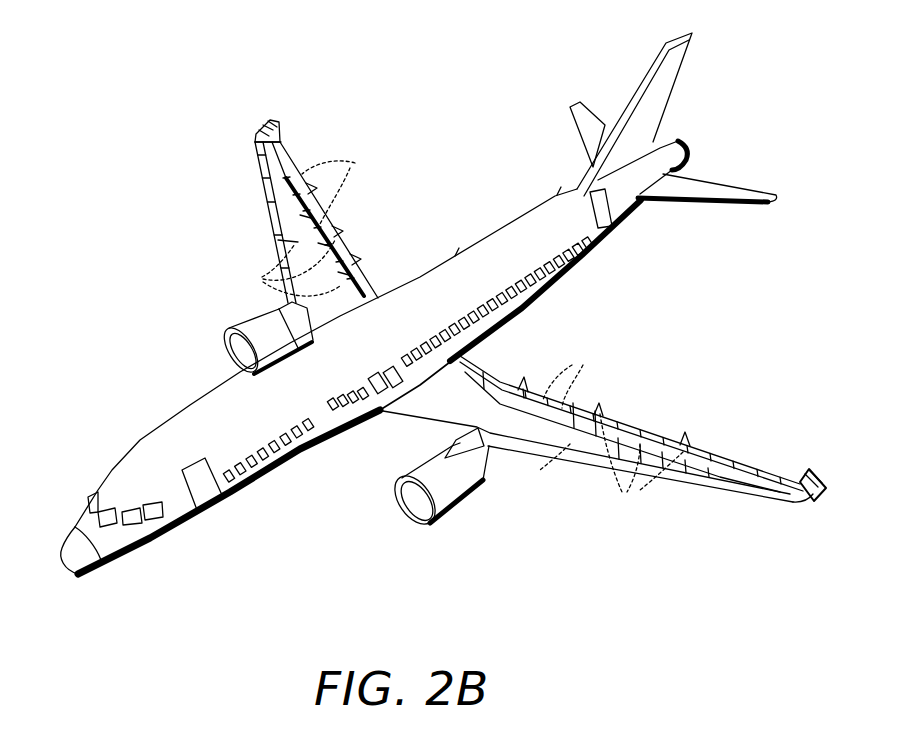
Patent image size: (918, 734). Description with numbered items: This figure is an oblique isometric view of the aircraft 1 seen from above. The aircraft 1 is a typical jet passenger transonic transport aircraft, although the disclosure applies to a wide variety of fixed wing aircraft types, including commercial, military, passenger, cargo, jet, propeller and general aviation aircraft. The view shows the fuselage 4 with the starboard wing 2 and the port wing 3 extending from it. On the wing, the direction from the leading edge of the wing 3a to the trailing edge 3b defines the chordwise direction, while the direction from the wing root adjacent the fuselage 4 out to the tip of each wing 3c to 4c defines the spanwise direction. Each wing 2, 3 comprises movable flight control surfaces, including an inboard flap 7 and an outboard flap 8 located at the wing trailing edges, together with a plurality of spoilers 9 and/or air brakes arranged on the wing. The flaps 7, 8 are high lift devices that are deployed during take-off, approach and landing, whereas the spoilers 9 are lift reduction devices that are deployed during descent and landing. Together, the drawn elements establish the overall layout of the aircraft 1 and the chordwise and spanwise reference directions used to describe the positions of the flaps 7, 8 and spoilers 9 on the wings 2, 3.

The aircraft 1 is at (122, 239).
The starboard wing 2 is at (297, 242).
The port wing 3 is at (617, 461).
The leading edge of the wing 3a is at (732, 492).
The trailing edge 3b is at (748, 465).
The tip of the wing 3c is at (821, 488).
The fuselage 4 is at (502, 242).
The tip of the wing 4c is at (253, 139).
The inboard flap 7 is at (370, 268).
The outboard flap 8 is at (338, 236).
The spoiler 9 is at (458, 345).